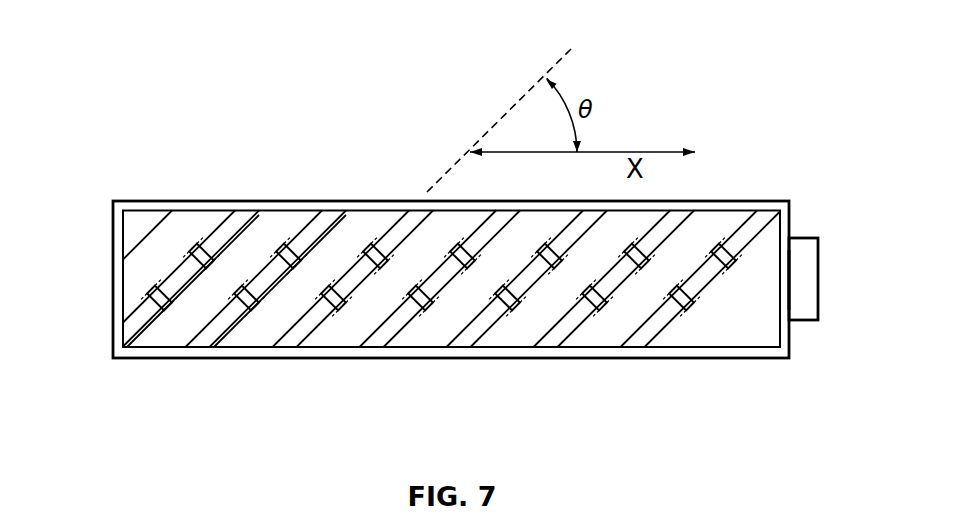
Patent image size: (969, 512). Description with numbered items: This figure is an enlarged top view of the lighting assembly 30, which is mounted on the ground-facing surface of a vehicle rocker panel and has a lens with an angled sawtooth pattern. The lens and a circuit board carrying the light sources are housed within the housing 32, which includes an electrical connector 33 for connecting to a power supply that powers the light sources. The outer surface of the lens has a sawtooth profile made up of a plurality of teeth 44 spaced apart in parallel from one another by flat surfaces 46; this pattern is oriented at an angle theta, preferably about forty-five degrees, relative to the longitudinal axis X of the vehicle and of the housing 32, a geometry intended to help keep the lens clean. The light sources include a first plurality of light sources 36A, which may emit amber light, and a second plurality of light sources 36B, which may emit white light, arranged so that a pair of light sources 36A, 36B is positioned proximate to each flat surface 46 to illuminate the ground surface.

The lighting assembly 30 is at (130, 163).
The housing 32 is at (786, 220).
The electrical connector 33 is at (808, 293).
The first plurality of light sources 36A is at (242, 303).
The second plurality of light sources 36B is at (197, 258).
The teeth 44 is at (165, 335).
The flat surfaces 46 is at (230, 226).